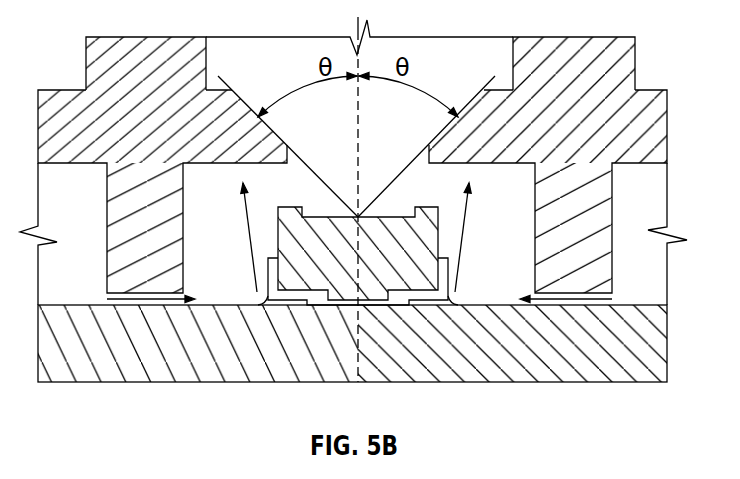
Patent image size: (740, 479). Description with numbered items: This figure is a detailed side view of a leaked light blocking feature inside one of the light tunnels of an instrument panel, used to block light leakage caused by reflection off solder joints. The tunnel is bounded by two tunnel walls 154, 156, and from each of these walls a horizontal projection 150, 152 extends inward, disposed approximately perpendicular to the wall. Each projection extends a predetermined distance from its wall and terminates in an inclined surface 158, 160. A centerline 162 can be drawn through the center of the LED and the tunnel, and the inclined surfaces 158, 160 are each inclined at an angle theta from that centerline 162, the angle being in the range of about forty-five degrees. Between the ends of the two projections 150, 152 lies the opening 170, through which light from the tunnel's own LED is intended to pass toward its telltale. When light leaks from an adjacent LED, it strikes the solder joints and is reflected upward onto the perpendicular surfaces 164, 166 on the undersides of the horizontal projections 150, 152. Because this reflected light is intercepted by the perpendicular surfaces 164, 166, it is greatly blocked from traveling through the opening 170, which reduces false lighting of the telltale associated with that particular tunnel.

The projection 150 is at (238, 145).
The projection 152 is at (507, 151).
The tunnel wall 154 is at (90, 63).
The tunnel wall 156 is at (634, 63).
The inclined surface 158 is at (232, 89).
The inclined surface 160 is at (488, 88).
The centerline 162 is at (357, 130).
The perpendicular surface 164 is at (232, 164).
The perpendicular surface 166 is at (508, 164).
The opening 170 is at (403, 166).